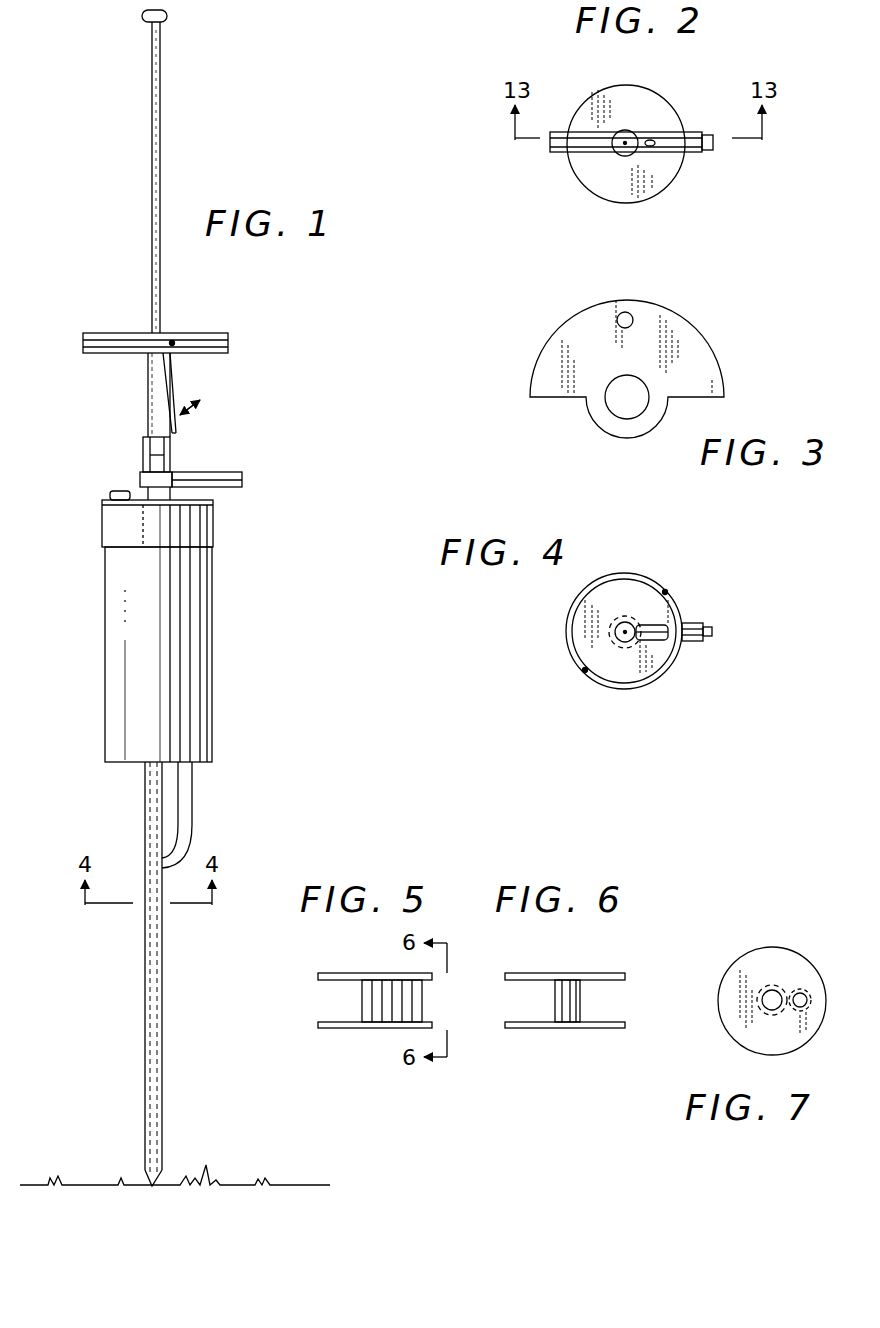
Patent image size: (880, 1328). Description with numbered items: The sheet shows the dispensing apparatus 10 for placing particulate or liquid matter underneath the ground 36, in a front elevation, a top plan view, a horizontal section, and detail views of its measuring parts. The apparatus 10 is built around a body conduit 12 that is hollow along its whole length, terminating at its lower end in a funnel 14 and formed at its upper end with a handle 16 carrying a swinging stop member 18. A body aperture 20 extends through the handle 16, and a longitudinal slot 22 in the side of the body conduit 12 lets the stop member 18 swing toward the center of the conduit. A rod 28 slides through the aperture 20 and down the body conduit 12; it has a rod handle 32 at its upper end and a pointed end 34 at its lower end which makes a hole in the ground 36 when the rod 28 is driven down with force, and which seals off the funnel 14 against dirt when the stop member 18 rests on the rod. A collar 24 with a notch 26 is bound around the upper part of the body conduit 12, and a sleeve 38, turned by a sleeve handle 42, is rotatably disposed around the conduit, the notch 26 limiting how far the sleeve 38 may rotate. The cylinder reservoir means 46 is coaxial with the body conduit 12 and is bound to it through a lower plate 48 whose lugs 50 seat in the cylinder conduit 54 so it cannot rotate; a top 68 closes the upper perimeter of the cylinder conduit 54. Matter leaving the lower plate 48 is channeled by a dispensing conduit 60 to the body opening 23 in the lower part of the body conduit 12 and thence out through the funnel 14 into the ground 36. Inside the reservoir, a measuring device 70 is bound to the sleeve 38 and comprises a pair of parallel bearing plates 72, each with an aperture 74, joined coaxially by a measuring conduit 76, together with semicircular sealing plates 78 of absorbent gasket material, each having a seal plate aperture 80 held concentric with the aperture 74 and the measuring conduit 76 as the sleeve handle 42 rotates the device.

In FIG. 1, the dispensing apparatus 10 is at (260, 452).
In FIG. 1, the body conduit 12 is at (148, 380).
In FIG. 4, the body conduit 12 is at (605, 650).
In FIG. 1, the funnel 14 is at (160, 1172).
In FIG. 1, the handle 16 is at (205, 345).
In FIG. 2, the handle 16 is at (665, 148).
In FIG. 4, the handle 16 is at (698, 622).
In FIG. 1, the swinging stop member 18 is at (176, 382).
In FIG. 1, the body aperture 20 is at (162, 333).
In FIG. 1, the longitudinal slot 22 is at (180, 395).
In FIG. 1, the body opening 23 is at (165, 862).
In FIG. 1, the collar 24 is at (168, 452).
In FIG. 1, the notch 26 is at (165, 457).
In FIG. 1, the rod 28 is at (155, 195).
In FIG. 4, the rod 28 is at (618, 632).
In FIG. 1, the rod handle 32 is at (140, 22).
In FIG. 2, the rod handle 32 is at (627, 142).
In FIG. 1, the pointed end 34 is at (148, 1183).
In FIG. 1, the ground 36 is at (226, 1208).
In FIG. 1, the sleeve 38 is at (200, 496).
In FIG. 5, the sleeve 38 is at (372, 999).
In FIG. 1, the sleeve handle 42 is at (242, 480).
In FIG. 2, the sleeve handle 42 is at (713, 150).
In FIG. 4, the sleeve handle 42 is at (712, 632).
In FIG. 1, the cylinder reservoir means 46 is at (218, 630).
In FIG. 4, the lower plate 48 is at (635, 596).
In FIG. 4, the lugs 50 is at (585, 670).
In FIG. 1, the cylinder conduit 54 is at (122, 660).
In FIG. 1, the dispensing conduit 60 is at (195, 830).
In FIG. 4, the dispensing conduit 60 is at (658, 642).
In FIG. 1, the top 68 is at (120, 525).
In FIG. 1, the measuring device 70 is at (114, 493).
In FIG. 6, the bearing plates 72 is at (535, 973).
In FIG. 7, the bearing plates 72 is at (757, 972).
In FIG. 7, the aperture 74 is at (804, 995).
In FIG. 5, the measuring conduit 76 is at (395, 1005).
In FIG. 6, the measuring conduit 76 is at (572, 1003).
In FIG. 3, the sealing plates 78 is at (688, 373).
In FIG. 3, the seal plate aperture 80 is at (618, 318).